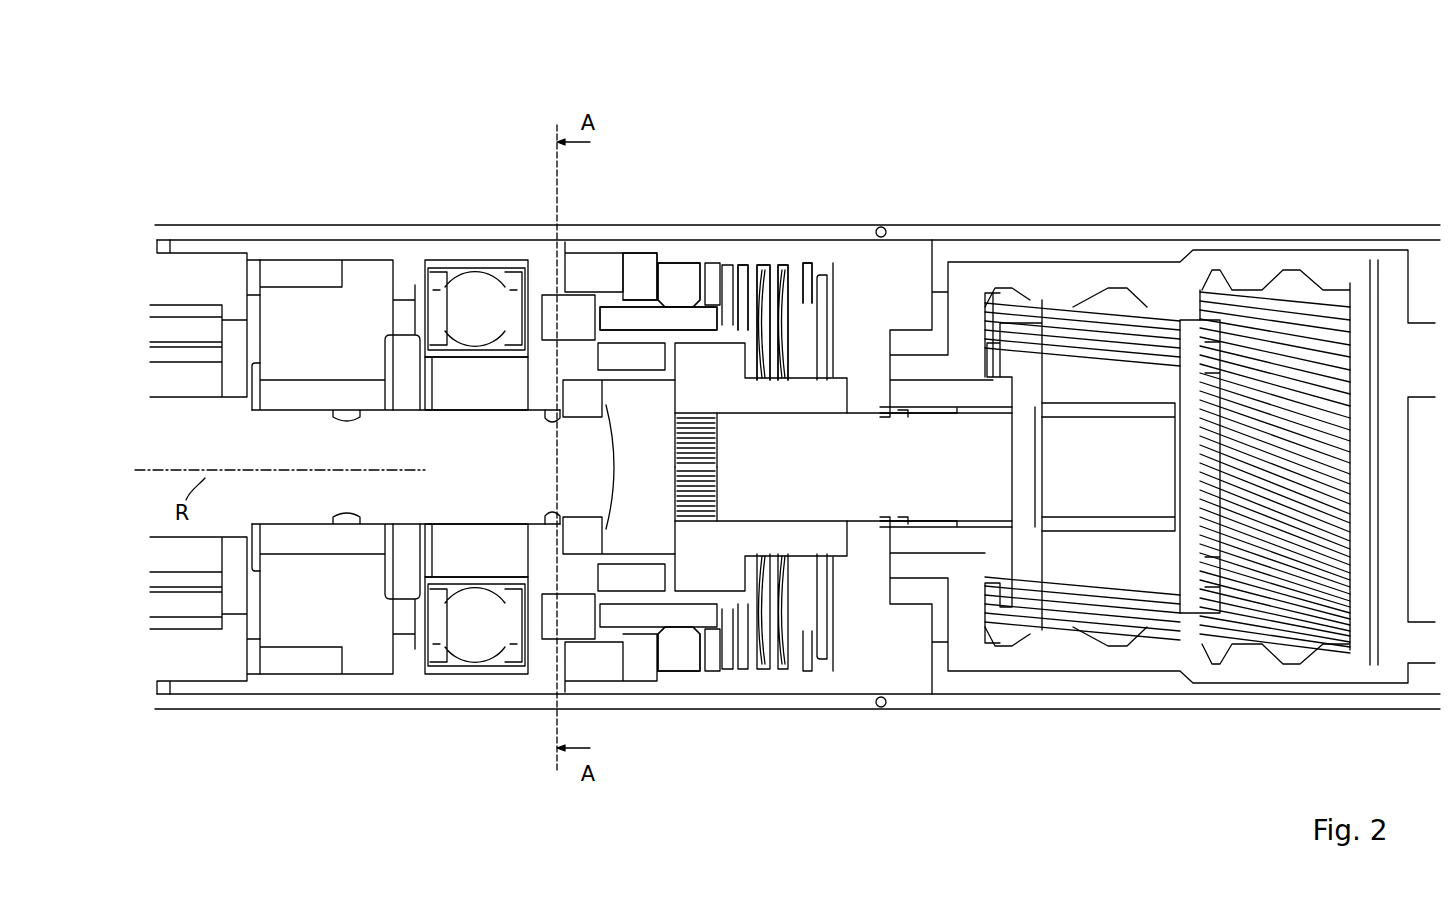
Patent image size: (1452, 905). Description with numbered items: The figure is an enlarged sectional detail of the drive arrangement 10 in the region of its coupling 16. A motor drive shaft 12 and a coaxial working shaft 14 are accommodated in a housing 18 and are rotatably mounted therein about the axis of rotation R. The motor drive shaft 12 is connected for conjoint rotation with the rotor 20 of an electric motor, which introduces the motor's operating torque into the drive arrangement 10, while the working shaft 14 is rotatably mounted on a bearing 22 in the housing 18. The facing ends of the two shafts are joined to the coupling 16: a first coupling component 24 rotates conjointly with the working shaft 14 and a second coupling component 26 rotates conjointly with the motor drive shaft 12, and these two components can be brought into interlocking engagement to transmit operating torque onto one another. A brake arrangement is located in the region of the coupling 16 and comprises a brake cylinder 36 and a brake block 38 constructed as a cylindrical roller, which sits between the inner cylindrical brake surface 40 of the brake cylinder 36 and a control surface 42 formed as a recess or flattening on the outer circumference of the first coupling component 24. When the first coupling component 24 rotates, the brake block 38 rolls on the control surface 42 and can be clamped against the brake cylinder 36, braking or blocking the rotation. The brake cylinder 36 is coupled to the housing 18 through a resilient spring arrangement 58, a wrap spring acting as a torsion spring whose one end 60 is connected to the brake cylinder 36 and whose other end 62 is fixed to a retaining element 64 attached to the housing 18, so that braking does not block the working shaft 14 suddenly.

The drive arrangement 10 is at (353, 172).
The motor drive shaft 12 is at (884, 495).
The working shaft 14 is at (531, 489).
The coupling 16 is at (800, 240).
The housing 18 is at (905, 227).
The rotor 20 is at (1075, 275).
The bearing 22 is at (475, 300).
The first coupling component 24 is at (494, 395).
The second coupling component 26 is at (800, 398).
The brake cylinder 36 is at (665, 278).
The brake block 38 is at (640, 345).
The inner cylindrical brake surface 40 is at (658, 300).
The control surface 42 is at (640, 377).
The spring arrangement 58 is at (730, 366).
The end of wrap spring 60 is at (712, 288).
The other end of wrap spring 62 is at (815, 263).
The retaining element 64 is at (768, 300).